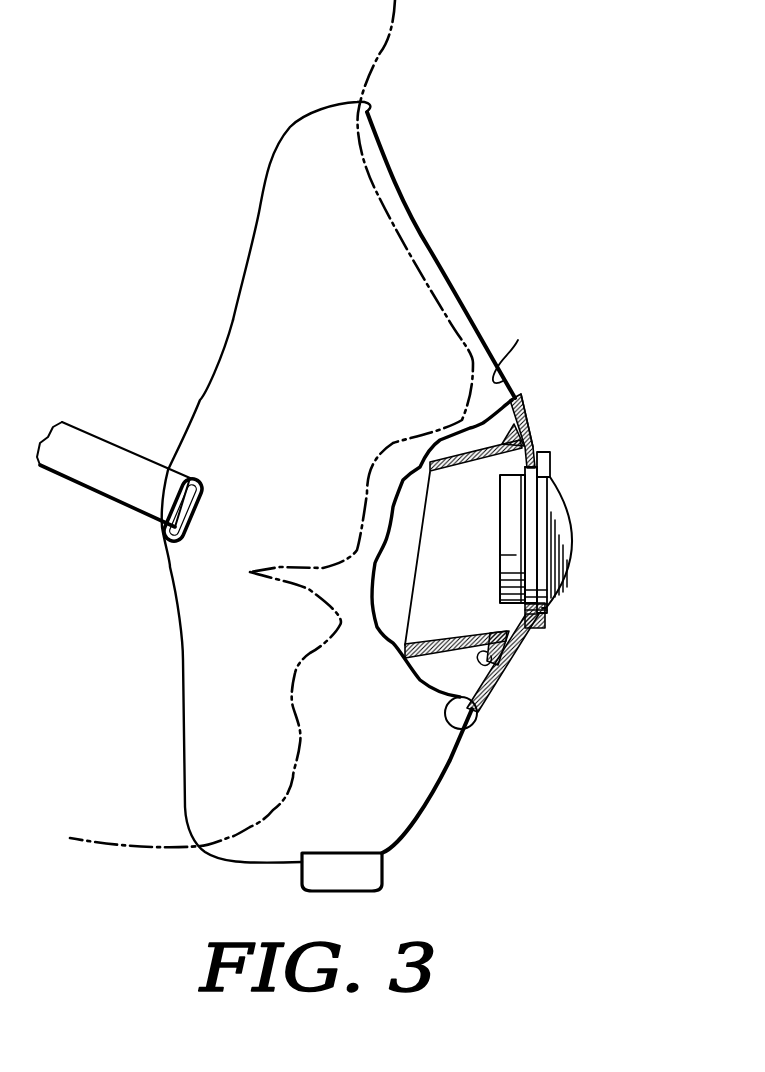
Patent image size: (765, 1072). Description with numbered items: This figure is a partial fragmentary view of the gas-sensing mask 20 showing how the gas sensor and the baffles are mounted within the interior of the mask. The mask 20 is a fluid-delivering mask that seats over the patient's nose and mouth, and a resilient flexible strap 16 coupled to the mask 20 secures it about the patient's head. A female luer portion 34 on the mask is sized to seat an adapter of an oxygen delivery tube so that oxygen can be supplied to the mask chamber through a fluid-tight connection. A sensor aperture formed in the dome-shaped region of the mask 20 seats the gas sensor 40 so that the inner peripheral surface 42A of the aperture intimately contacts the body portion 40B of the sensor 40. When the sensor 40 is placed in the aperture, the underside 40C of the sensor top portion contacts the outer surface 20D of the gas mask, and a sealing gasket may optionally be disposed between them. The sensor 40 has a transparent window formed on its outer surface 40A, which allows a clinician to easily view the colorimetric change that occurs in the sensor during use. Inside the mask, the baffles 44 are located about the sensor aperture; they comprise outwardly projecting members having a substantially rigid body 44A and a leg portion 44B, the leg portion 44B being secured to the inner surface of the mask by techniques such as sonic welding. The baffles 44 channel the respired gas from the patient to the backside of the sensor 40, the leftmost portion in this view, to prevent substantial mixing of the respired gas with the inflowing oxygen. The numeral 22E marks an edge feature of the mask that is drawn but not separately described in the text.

The resilient flexible strap 16 is at (92, 445).
The gas-sensing mask 20 is at (493, 697).
The outer surface of the gas mask 20D is at (536, 428).
The edge eyelet 22E is at (467, 740).
The female luer portion 34 is at (383, 873).
The gas sensor 40 is at (574, 536).
The outer surface of the gas sensor 40A is at (572, 522).
The body portion of the sensor 40B is at (548, 443).
The underside of the gas sensor top portion 40C is at (538, 629).
The inner peripheral surface of the sensor aperture 42A is at (551, 470).
The baffles 44 is at (520, 397).
The rigid body of the baffle 44A is at (433, 558).
The leg portion of the baffle 44B is at (507, 660).